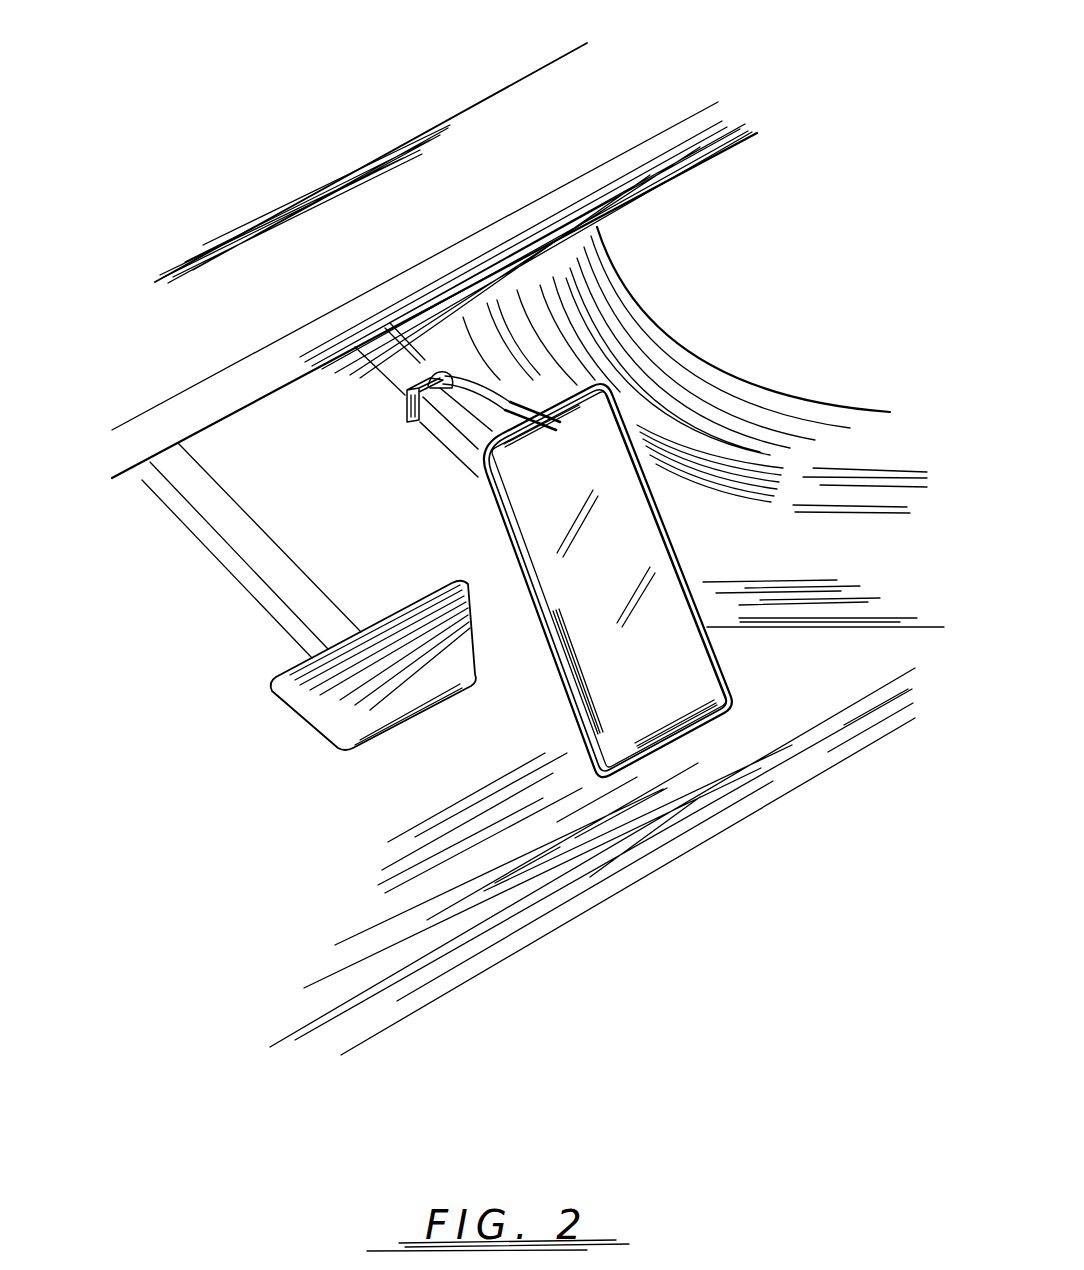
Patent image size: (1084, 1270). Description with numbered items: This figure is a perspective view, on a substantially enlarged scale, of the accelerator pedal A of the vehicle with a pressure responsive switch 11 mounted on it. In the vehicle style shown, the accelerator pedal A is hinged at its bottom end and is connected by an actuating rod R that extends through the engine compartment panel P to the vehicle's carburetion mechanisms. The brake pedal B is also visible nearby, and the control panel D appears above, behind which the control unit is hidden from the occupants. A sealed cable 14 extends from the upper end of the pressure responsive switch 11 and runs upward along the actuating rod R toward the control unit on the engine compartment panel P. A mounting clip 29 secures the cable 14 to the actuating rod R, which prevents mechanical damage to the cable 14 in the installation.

The control panel D is at (333, 267).
The actuating rod R is at (390, 382).
The engine compartment panel P is at (280, 473).
The brake pedal B is at (325, 690).
The accelerator pedal A is at (576, 580).
The cable 14 is at (418, 349).
The mounting clip 29 is at (412, 418).
The pressure responsive switch 11 is at (613, 677).